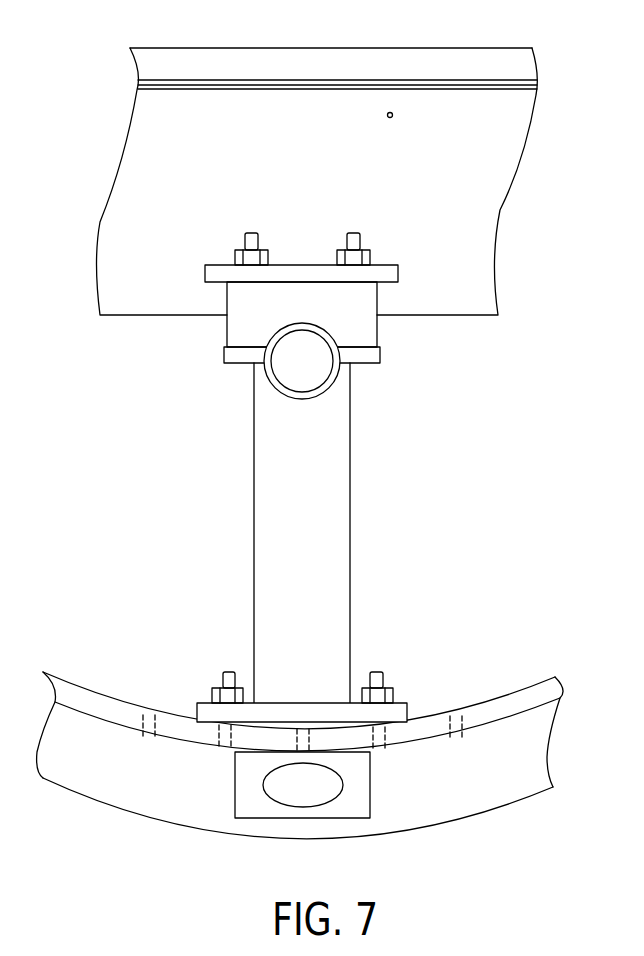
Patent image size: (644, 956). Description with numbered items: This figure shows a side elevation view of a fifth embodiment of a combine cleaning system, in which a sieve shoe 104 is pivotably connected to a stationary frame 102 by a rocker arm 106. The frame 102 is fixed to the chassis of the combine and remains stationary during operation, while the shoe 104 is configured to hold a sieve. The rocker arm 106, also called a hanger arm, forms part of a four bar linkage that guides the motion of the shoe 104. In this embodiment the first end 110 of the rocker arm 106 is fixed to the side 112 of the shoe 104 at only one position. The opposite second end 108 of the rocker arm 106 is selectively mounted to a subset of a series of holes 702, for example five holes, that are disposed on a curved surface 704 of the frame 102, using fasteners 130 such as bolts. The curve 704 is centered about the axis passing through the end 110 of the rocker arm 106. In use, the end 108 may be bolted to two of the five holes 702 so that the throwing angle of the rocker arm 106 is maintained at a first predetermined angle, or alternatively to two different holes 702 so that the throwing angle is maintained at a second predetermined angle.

The frame 102 is at (325, 739).
The sieve shoe 104 is at (510, 137).
The rocker arm 106 is at (340, 523).
The second end of the rocker arm 108 is at (303, 785).
The first end of the rocker arm 110 is at (315, 370).
The side of the shoe 112 is at (393, 115).
The fasteners 130 is at (392, 688).
The series of holes 702 is at (147, 716).
The curved surface 704 is at (490, 705).